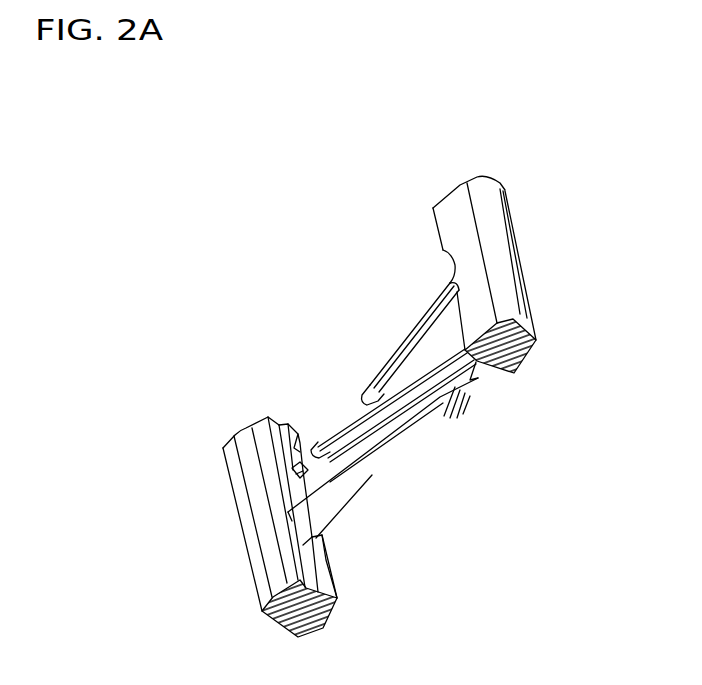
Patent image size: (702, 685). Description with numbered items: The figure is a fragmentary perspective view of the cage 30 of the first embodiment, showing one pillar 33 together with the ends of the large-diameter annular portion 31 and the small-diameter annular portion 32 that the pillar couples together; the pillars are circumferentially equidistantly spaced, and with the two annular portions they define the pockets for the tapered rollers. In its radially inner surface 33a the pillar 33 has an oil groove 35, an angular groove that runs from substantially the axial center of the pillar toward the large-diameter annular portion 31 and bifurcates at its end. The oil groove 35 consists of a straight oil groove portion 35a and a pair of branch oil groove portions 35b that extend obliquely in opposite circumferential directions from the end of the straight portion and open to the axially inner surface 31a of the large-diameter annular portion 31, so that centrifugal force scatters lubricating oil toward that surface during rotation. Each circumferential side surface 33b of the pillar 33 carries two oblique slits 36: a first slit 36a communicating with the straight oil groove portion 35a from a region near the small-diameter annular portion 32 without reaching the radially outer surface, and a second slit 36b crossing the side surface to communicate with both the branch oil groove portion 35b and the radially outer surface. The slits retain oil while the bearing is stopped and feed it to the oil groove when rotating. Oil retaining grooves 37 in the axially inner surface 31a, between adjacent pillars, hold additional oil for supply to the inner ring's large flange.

The cage 30 is at (445, 183).
The large-diameter annular portion 31 is at (253, 541).
The axially inner surface 31a is at (320, 563).
The small-diameter annular portion 32 is at (497, 267).
The pillar 33 is at (400, 338).
The radially inner surface 33a is at (426, 305).
The circumferential side surface 33b is at (384, 421).
The oil groove 35 is at (316, 294).
The straight oil groove portion 35a is at (365, 392).
The branch oil groove portion 35b is at (315, 440).
The slit 36 is at (546, 401).
The first slit 36a is at (427, 370).
The second slit 36b is at (430, 416).
The oil retaining groove 37 is at (293, 450).